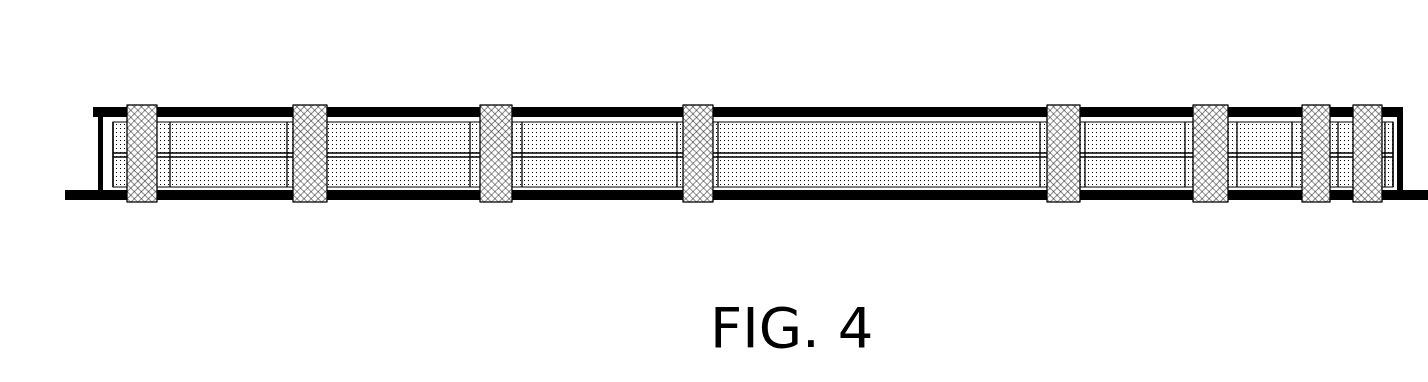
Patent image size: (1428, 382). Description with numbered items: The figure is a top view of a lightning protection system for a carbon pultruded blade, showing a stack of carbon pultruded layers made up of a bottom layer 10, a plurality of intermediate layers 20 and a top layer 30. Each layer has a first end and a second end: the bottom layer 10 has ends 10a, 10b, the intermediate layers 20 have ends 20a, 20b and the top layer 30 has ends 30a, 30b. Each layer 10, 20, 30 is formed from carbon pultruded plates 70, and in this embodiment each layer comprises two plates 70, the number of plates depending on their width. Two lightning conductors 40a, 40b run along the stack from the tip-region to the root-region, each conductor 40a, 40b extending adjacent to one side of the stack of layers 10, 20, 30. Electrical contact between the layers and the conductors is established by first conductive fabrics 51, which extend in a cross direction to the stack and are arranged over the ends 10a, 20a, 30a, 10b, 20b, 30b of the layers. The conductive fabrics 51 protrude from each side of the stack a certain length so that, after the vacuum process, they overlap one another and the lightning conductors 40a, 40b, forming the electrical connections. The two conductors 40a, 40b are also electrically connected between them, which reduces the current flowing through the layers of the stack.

The bottom layer 10 is at (228, 177).
The first end of bottom layer 10a is at (125, 175).
The second end of bottom layer 10b is at (1388, 177).
The intermediate layers 20 is at (408, 175).
The first end of intermediate layer 20a is at (293, 178).
The second end of intermediate layer 20b is at (1240, 175).
The top layer 30 is at (887, 175).
The first end of top layer 30a is at (683, 175).
The second end of top layer 30b is at (1088, 175).
The lightning conductor 40a is at (887, 108).
The lightning conductor 40b is at (922, 192).
The first conductive fabrics 51 is at (146, 122).
The carbon pultruded plate 70 is at (267, 170).